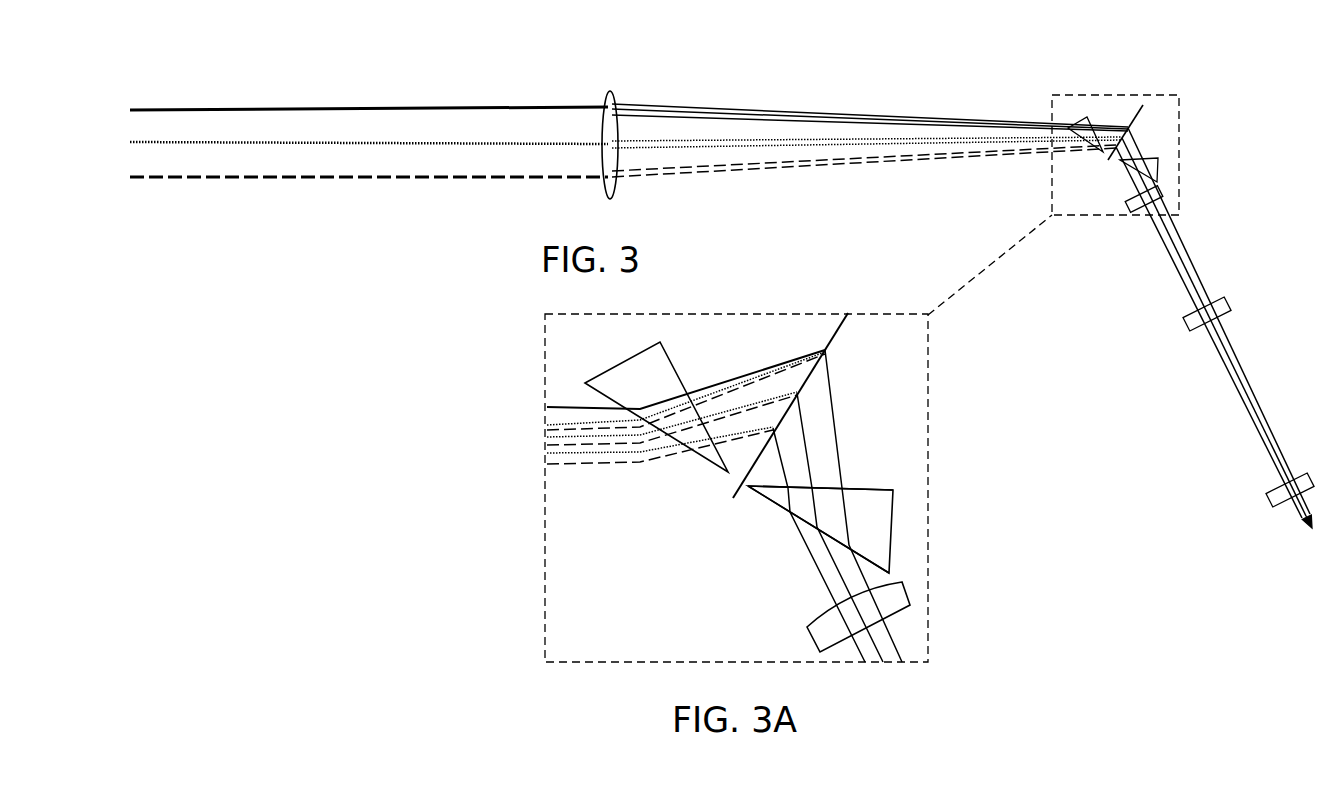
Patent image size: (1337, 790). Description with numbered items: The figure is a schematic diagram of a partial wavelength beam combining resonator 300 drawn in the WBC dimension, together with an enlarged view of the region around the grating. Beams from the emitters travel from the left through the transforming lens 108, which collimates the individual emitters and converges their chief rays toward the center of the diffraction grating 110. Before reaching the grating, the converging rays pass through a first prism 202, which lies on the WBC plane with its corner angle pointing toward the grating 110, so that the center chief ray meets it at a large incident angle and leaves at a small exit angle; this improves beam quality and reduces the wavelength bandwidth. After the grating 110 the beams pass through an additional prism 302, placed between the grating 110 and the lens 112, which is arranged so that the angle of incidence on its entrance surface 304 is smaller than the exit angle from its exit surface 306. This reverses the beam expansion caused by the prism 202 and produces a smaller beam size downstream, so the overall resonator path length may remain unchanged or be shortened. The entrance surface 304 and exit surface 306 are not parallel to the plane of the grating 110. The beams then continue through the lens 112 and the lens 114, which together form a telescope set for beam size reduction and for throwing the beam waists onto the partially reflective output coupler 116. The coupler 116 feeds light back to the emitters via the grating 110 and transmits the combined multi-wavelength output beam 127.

In FIG. 3, the WBC resonator 300 is at (328, 43).
In FIG. 3, the transforming lens 108 is at (645, 88).
In FIG. 3A, the diffraction grating 110 is at (848, 345).
In FIG. 3A, the lens 112 is at (797, 637).
In FIG. 3, the lens 114 is at (1166, 317).
In FIG. 3, the partially reflective output coupler 116 is at (1256, 492).
In FIG. 3, the combined multi-wavelength output beam 127 is at (1297, 506).
In FIG. 3A, the prism 202 is at (706, 472).
In FIG. 3A, the prism 302 is at (882, 517).
In FIG. 3A, the entrance surface 304 is at (868, 480).
In FIG. 3A, the exit surface 306 is at (762, 510).